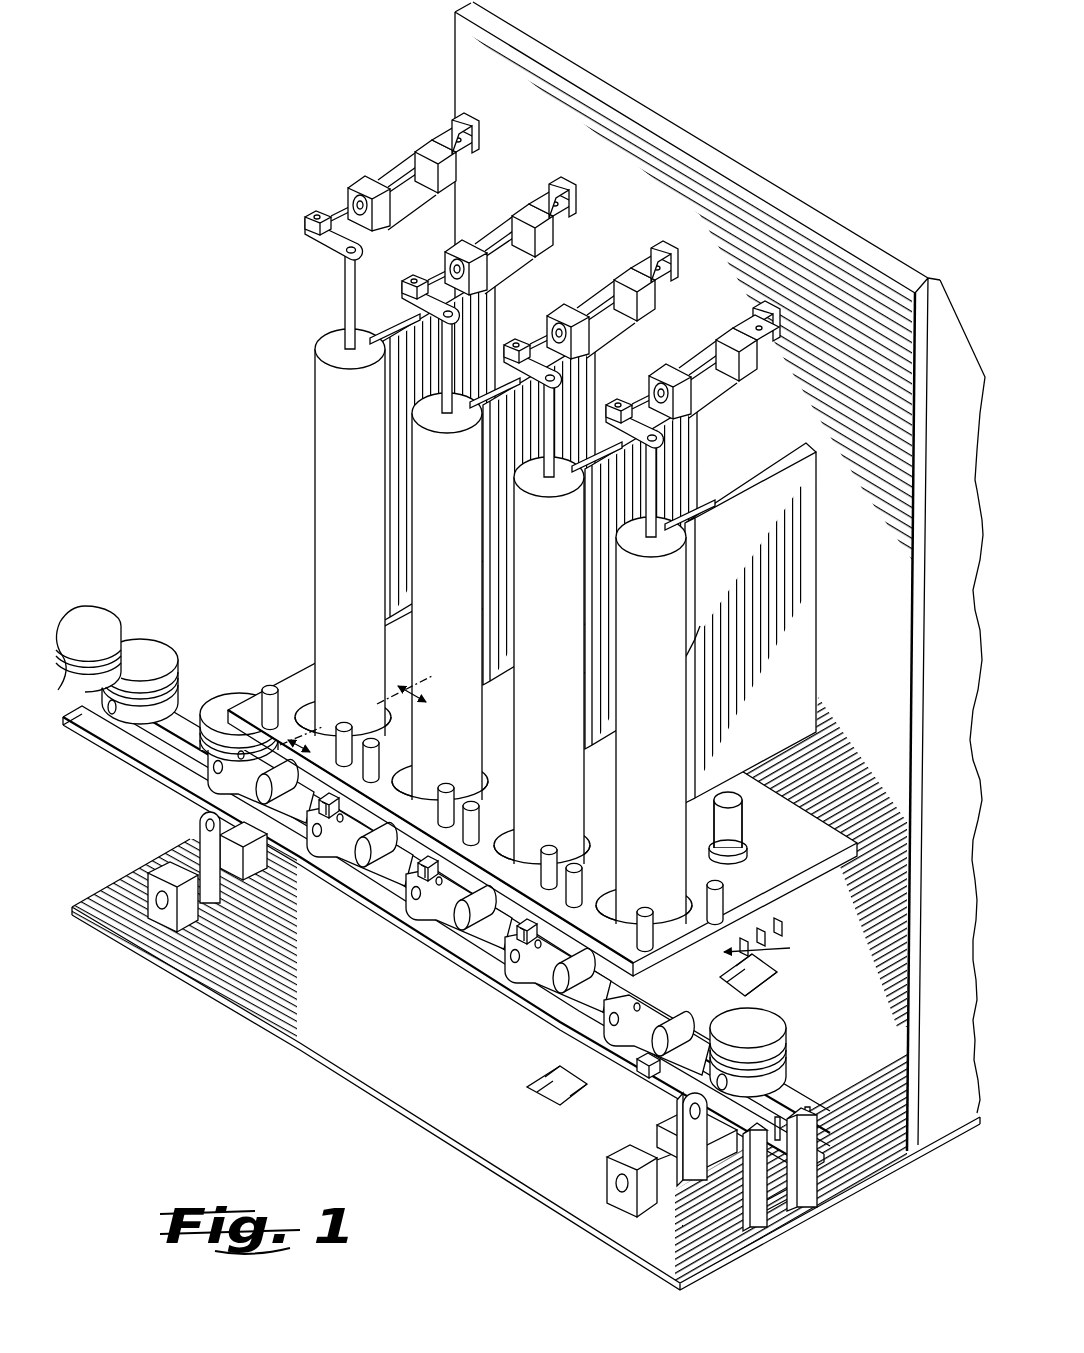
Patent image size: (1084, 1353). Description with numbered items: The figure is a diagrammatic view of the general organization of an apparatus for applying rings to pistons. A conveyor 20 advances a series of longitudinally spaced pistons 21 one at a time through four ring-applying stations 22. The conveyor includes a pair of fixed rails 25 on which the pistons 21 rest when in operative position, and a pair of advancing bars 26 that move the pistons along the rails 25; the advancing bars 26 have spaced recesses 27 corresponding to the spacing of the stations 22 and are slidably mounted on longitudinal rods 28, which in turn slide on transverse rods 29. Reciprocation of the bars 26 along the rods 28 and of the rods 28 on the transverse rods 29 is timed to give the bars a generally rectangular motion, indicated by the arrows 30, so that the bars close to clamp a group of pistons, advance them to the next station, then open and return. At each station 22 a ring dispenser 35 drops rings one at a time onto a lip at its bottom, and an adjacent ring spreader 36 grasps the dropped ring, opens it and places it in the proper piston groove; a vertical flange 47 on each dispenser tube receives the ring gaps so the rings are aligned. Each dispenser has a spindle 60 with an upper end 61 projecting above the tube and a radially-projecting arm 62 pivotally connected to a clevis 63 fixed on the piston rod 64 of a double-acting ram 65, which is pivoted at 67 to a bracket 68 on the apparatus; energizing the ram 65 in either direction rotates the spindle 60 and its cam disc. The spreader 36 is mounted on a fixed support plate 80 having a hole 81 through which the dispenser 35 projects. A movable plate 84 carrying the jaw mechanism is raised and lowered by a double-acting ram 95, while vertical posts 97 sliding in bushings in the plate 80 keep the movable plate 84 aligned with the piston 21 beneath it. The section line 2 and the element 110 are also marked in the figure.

The section line 2 is at (355, 711).
The conveyor 20 is at (137, 767).
The piston 21 is at (167, 660).
The ring-applying station 22 is at (459, 910).
The fixed rail 25 is at (782, 1092).
The advancing bar 26 is at (714, 1018).
The recess 27 is at (530, 940).
The longitudinal rod 28 is at (477, 935).
The transverse rod 29 is at (198, 872).
The arrow 30 is at (778, 968).
The ring dispenser 35 is at (697, 640).
The ring spreader 36 is at (772, 948).
The vertical flange 47 is at (700, 530).
The spindle 60 is at (656, 542).
The upper end 61 is at (655, 470).
The radially-projecting arm 62 is at (618, 452).
The clevis 63 is at (628, 398).
The piston rod 64 is at (706, 382).
The double-acting ram 65 is at (598, 292).
The pivot 67 is at (656, 268).
The bracket 68 is at (672, 284).
The support plate 80 is at (563, 783).
The hole 81 is at (610, 893).
The movable plate 84 is at (784, 904).
The double-acting ram 95 is at (745, 822).
The vertical post 97 is at (648, 912).
The pin 110 is at (575, 967).